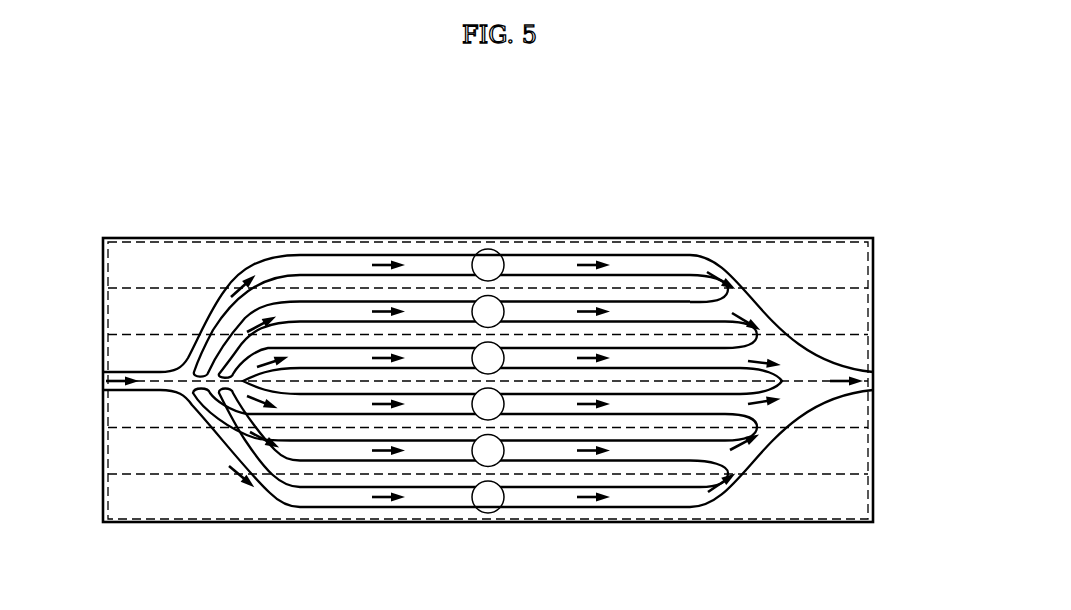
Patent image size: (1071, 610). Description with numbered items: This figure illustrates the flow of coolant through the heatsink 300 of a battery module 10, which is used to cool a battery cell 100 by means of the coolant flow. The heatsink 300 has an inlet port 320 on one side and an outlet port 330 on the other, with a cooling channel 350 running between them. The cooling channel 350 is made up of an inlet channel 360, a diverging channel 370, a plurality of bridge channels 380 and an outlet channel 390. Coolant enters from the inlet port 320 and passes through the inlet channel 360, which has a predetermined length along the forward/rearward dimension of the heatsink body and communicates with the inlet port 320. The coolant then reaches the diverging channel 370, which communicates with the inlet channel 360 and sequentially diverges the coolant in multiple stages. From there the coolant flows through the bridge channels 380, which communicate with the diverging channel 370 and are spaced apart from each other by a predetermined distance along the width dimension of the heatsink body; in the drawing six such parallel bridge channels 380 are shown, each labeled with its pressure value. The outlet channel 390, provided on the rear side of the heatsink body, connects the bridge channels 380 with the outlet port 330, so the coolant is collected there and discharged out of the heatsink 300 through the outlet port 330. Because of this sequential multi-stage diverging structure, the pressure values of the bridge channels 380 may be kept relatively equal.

The battery module 10 is at (153, 145).
The battery cell 100 is at (212, 240).
The heatsink 300 is at (423, 232).
The inlet port 320 is at (103, 382).
The outlet port 330 is at (873, 382).
The cooling channel 350 is at (553, 247).
The inlet channel 360 is at (163, 388).
The diverging channel 370 is at (187, 426).
The bridge channel 380 is at (545, 515).
The outlet channel 390 is at (828, 388).